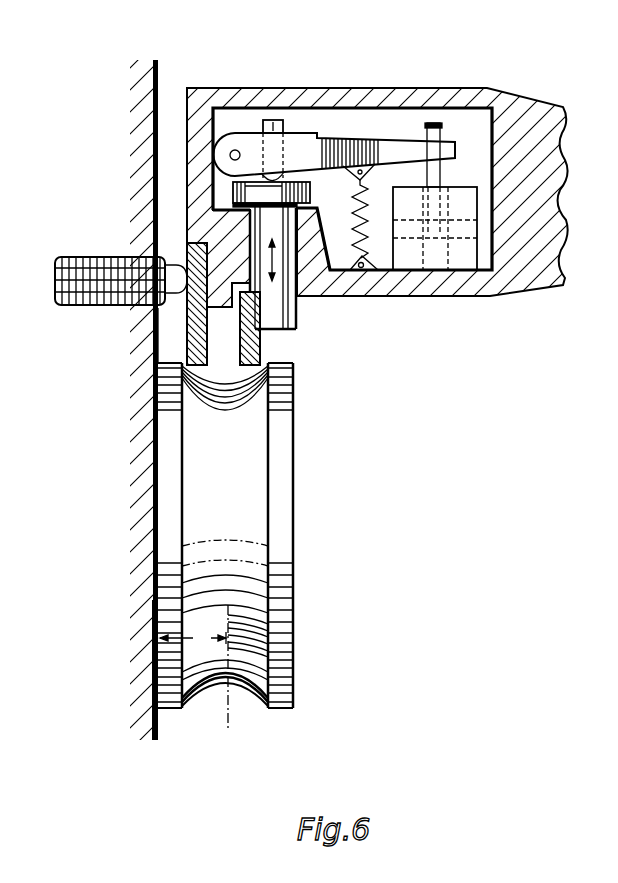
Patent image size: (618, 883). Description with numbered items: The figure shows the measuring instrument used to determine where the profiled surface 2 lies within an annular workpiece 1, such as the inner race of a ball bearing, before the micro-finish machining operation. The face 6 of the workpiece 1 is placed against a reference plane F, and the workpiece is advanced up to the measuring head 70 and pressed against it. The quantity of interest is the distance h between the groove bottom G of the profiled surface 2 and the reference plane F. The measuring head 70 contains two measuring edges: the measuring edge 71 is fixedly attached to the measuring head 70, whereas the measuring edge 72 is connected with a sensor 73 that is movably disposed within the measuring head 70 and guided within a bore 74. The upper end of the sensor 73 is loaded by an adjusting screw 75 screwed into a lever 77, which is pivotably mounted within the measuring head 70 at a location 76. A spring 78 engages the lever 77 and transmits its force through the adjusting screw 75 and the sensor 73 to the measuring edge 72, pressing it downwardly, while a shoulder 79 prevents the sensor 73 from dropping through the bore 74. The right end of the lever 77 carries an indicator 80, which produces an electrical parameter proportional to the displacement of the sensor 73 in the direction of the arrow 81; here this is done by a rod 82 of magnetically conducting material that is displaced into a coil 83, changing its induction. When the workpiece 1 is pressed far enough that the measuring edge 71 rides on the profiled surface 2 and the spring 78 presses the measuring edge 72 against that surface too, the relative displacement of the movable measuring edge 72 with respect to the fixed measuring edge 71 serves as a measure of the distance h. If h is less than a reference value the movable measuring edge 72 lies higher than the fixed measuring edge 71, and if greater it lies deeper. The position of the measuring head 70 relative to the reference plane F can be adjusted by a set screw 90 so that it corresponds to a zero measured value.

The reference plane F is at (160, 88).
The measuring head 70 is at (376, 85).
The indicator 80 is at (454, 170).
The lever 77 is at (318, 147).
The pivot location 76 is at (235, 149).
The adjusting screw 75 is at (266, 119).
The rod 82 is at (433, 122).
The coil 83 is at (460, 255).
The spring 78 is at (375, 240).
The shoulder 79 is at (233, 190).
The bore 74 is at (299, 258).
The sensor 73 is at (285, 314).
The fixed measuring edge 71 is at (197, 343).
The movable measuring edge 72 is at (258, 362).
The arrow 81 is at (152, 330).
The set screw 90 is at (95, 258).
The workpiece 1 is at (262, 467).
The profiled surface 2 is at (270, 400).
The face 6 is at (153, 680).
The groove bottom G is at (230, 688).
The distance h is at (193, 639).